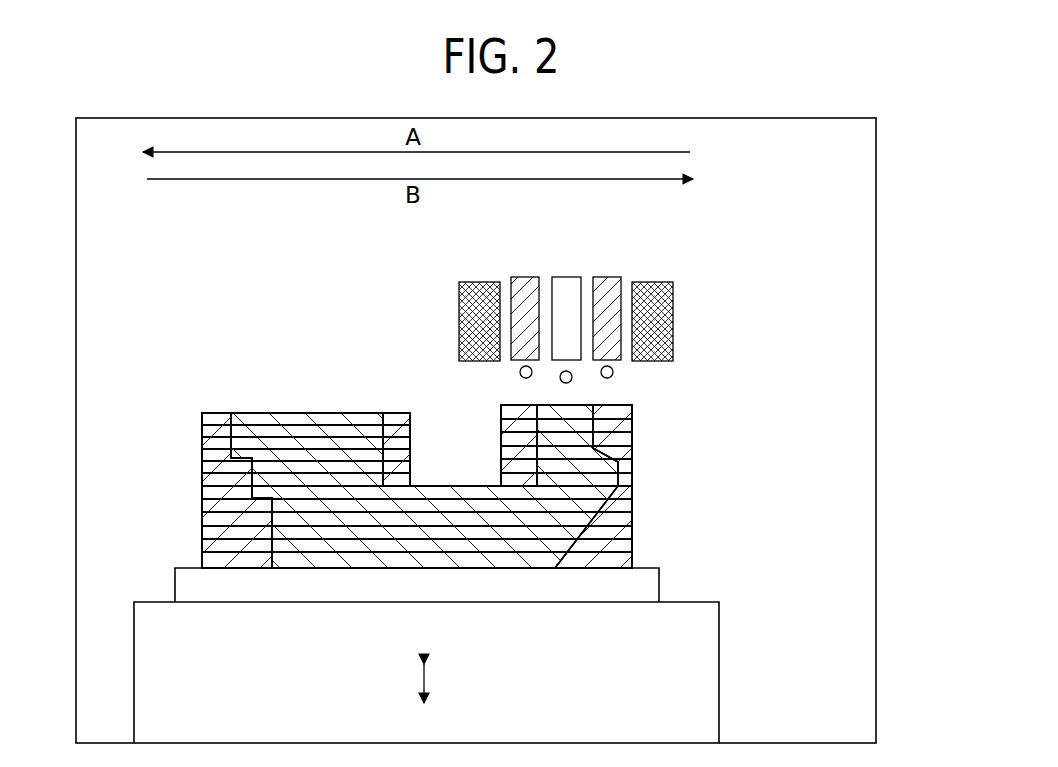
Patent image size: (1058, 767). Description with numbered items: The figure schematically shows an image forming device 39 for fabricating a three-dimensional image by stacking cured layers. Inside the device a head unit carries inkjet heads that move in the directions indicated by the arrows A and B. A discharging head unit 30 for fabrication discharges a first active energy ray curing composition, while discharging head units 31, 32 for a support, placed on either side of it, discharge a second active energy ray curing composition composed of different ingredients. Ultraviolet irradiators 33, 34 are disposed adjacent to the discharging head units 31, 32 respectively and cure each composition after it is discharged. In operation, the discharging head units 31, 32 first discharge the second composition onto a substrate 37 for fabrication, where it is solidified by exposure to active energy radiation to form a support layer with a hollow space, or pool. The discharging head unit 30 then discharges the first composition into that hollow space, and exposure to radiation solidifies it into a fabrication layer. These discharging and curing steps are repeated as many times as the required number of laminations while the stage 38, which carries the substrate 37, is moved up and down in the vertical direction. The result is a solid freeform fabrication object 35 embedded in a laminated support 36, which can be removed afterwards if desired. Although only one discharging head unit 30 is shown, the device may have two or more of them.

The discharging head unit for fabrication 30 is at (568, 277).
The discharging head unit for a support 31 is at (530, 277).
The discharging head unit for a support 32 is at (610, 277).
The ultraviolet irradiator 33 is at (459, 300).
The ultraviolet irradiator 34 is at (673, 300).
The solid freeform fabrication object 35 is at (323, 412).
The laminated support 36 is at (633, 435).
The substrate for fabrication 37 is at (659, 585).
The stage 38 is at (719, 617).
The image forming device 39 is at (876, 140).